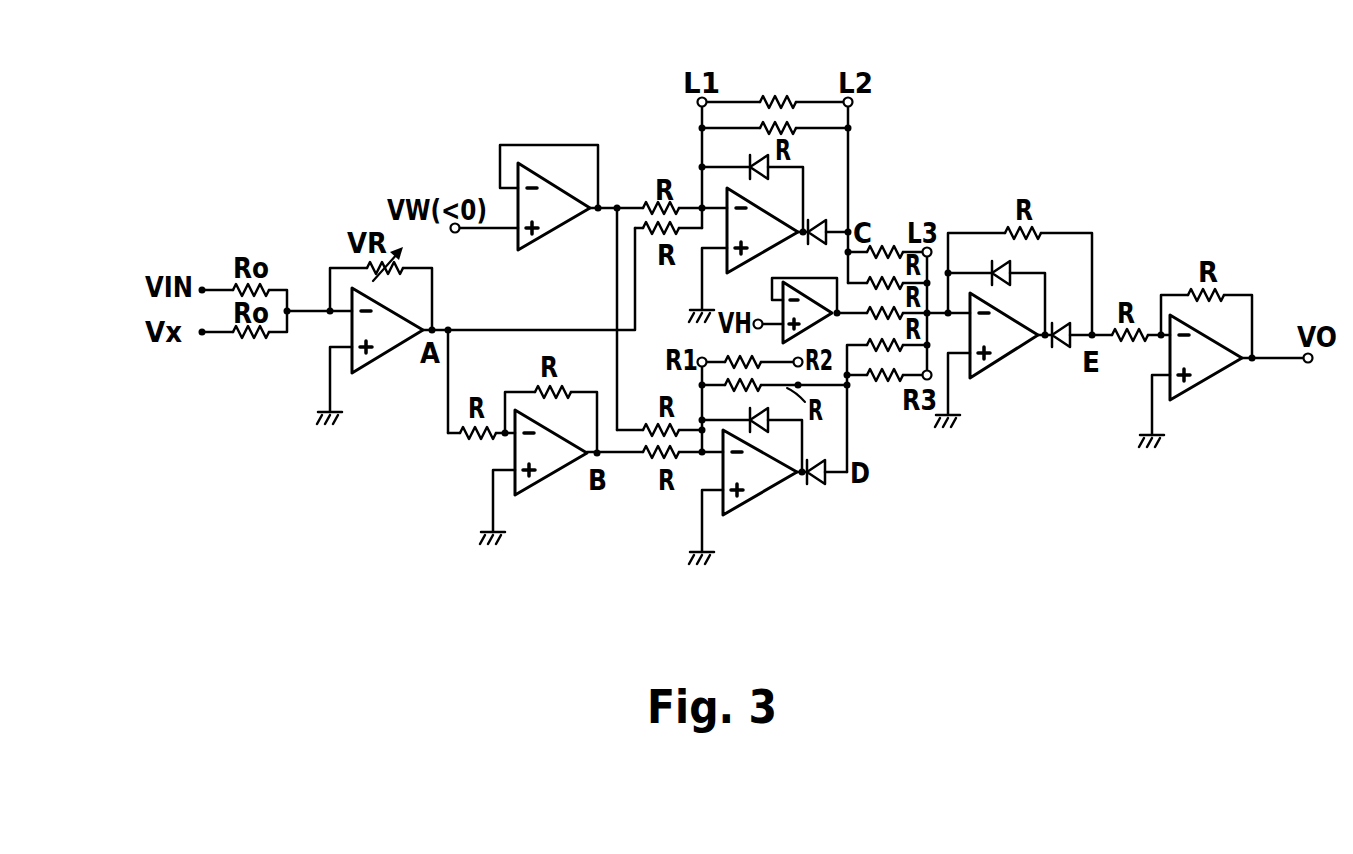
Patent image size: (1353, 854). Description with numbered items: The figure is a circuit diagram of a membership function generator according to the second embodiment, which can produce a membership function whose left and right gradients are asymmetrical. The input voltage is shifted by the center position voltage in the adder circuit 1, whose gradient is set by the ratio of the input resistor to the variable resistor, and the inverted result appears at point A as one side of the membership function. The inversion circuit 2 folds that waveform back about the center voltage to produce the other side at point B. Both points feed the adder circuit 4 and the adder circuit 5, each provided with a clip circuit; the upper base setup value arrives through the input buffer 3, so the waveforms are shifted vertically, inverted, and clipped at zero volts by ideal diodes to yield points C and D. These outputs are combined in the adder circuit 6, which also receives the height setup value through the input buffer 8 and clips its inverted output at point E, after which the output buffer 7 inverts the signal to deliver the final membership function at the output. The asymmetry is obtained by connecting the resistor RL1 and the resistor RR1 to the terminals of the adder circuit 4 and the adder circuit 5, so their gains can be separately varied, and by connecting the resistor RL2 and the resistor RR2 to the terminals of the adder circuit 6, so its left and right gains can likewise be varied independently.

The adder circuit 1 is at (374, 361).
The inversion circuit 2 is at (553, 473).
The input buffer 3 is at (553, 232).
The adder circuit with clip circuit 4 is at (777, 217).
The adder circuit with clip circuit 5 is at (770, 488).
The adder circuit with clip circuit 6 is at (1005, 358).
The output buffer 7 is at (1208, 378).
The input buffer 8 is at (780, 312).
The resistor RL1 is at (769, 97).
The resistor RL2 is at (887, 247).
The resistor RR1 is at (733, 367).
The resistor RR2 is at (880, 382).